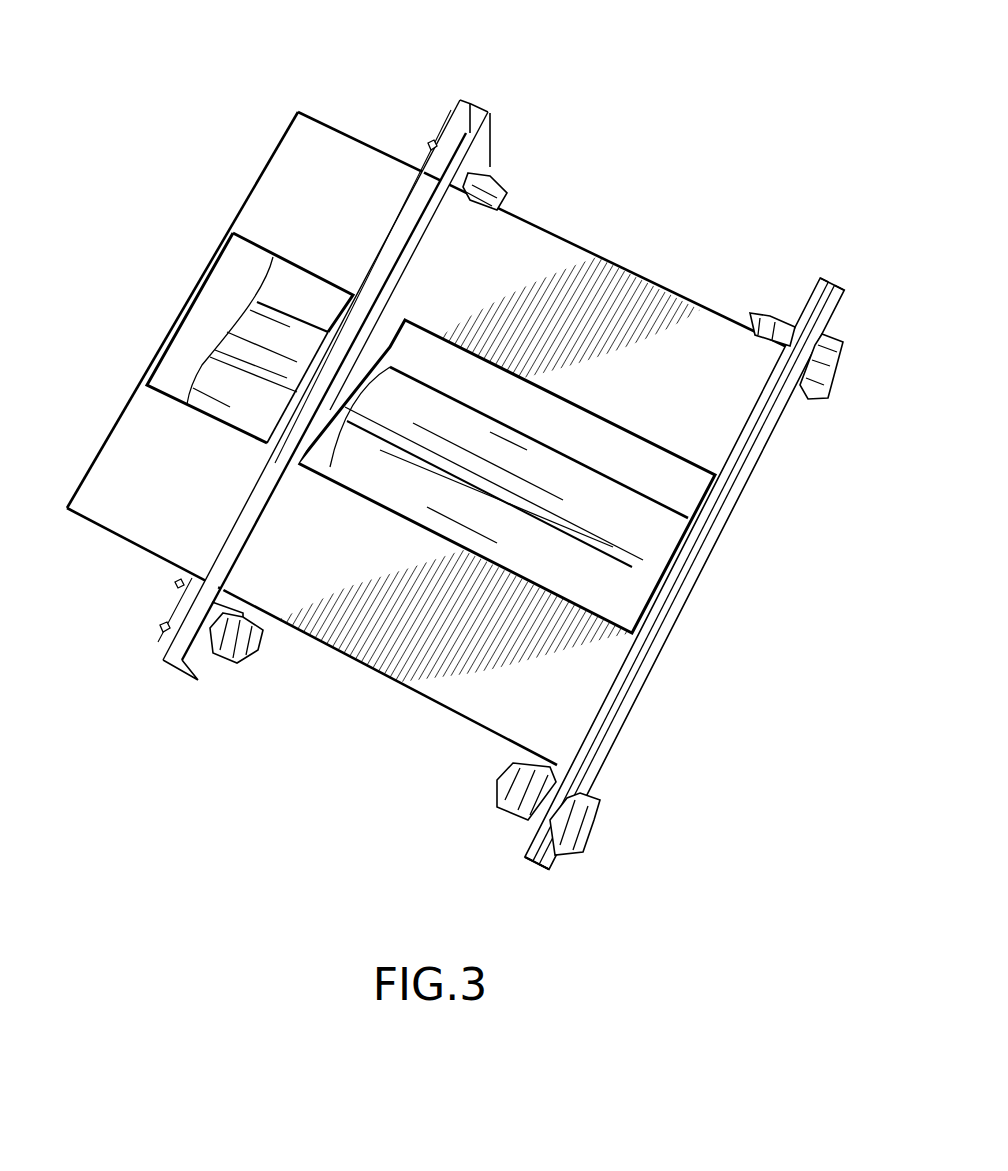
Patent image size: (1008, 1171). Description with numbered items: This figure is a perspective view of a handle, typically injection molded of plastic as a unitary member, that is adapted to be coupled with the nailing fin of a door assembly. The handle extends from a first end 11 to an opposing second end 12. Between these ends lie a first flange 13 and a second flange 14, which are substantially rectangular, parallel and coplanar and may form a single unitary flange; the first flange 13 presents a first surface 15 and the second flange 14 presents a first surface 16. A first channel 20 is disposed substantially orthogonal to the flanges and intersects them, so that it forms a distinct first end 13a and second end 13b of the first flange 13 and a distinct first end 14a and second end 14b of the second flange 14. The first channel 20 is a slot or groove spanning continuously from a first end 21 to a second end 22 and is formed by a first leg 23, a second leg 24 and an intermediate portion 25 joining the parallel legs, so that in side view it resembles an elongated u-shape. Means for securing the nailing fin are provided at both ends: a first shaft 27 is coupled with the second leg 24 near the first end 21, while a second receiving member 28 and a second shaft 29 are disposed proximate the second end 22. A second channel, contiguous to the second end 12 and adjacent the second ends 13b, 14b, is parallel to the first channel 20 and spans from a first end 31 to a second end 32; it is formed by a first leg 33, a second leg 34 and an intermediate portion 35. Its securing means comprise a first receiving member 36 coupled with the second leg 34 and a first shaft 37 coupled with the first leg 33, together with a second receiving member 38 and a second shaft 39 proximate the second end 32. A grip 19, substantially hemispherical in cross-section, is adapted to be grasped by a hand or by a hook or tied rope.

The first end 11 is at (183, 310).
The second end 12 is at (620, 745).
The first flange 13 is at (548, 243).
The first end of first flange 13a is at (290, 170).
The second end of first flange 13b is at (740, 415).
The second flange 14 is at (398, 668).
The first end of second flange 14a is at (145, 440).
The second end of second flange 14b is at (555, 735).
The first surface 15 is at (637, 290).
The first surface 16 is at (465, 700).
The grip 19 is at (650, 550).
The first channel 20 is at (175, 651).
The first end 21 is at (470, 100).
The second end 22 is at (208, 670).
The first leg 23 is at (455, 118).
The second leg 24 is at (495, 123).
The intermediate portion 25 is at (487, 112).
The first shaft 27 is at (500, 178).
The second receiving member 28 is at (160, 630).
The second shaft 29 is at (238, 660).
The first end 31 is at (820, 290).
The second end 32 is at (522, 860).
The first leg 33 is at (808, 300).
The second leg 34 is at (850, 308).
The intermediate portion 35 is at (838, 290).
The first receiving member 36 is at (845, 370).
The first shaft 37 is at (772, 320).
The second receiving member 38 is at (590, 822).
The second shaft 39 is at (505, 790).